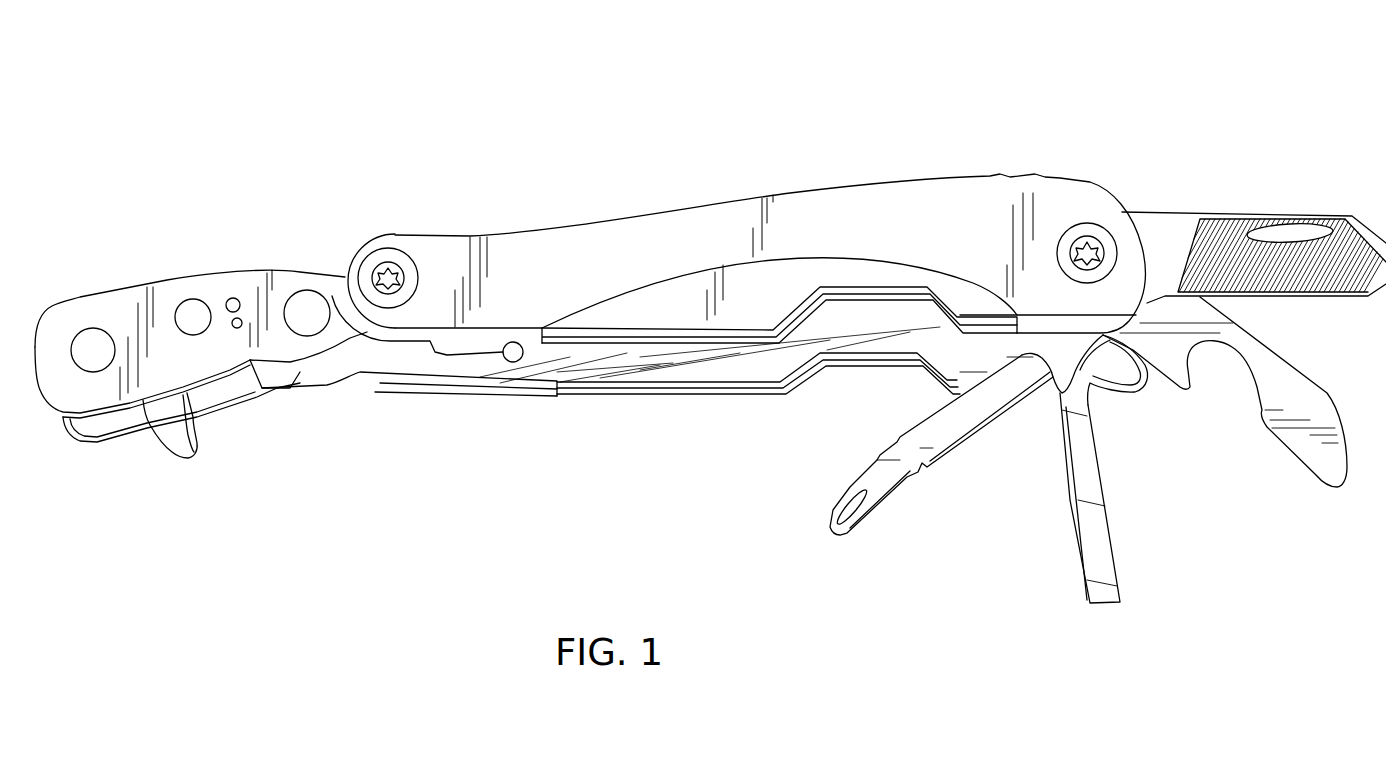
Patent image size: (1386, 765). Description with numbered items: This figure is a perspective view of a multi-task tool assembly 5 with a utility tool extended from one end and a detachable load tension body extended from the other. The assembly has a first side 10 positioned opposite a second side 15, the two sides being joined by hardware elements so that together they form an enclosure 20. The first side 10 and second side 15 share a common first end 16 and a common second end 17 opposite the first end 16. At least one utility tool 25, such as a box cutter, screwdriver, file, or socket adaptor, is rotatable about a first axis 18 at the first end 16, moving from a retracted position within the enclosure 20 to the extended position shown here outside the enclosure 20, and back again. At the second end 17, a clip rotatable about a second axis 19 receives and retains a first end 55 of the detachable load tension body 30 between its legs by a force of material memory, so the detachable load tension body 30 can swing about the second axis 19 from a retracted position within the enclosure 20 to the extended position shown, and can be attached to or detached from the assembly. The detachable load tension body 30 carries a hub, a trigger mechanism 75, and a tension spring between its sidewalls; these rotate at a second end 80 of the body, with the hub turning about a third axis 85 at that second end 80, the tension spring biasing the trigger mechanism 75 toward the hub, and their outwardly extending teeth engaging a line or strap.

The multi-task tool assembly 5 is at (944, 84).
The first side 10 is at (700, 218).
The second side 15 is at (742, 372).
The first end 16 is at (1103, 210).
The second end 17 is at (512, 248).
The first axis 18 is at (1084, 250).
The second axis 19 is at (388, 266).
The enclosure 20 is at (590, 428).
The utility tool 25 is at (1157, 430).
The detachable load tension body 30 is at (197, 236).
The first end of the detachable load tension body 55 is at (305, 304).
The trigger mechanism 75 is at (203, 452).
The second end of the detachable load tension body 80 is at (98, 461).
The third axis 85 is at (95, 342).